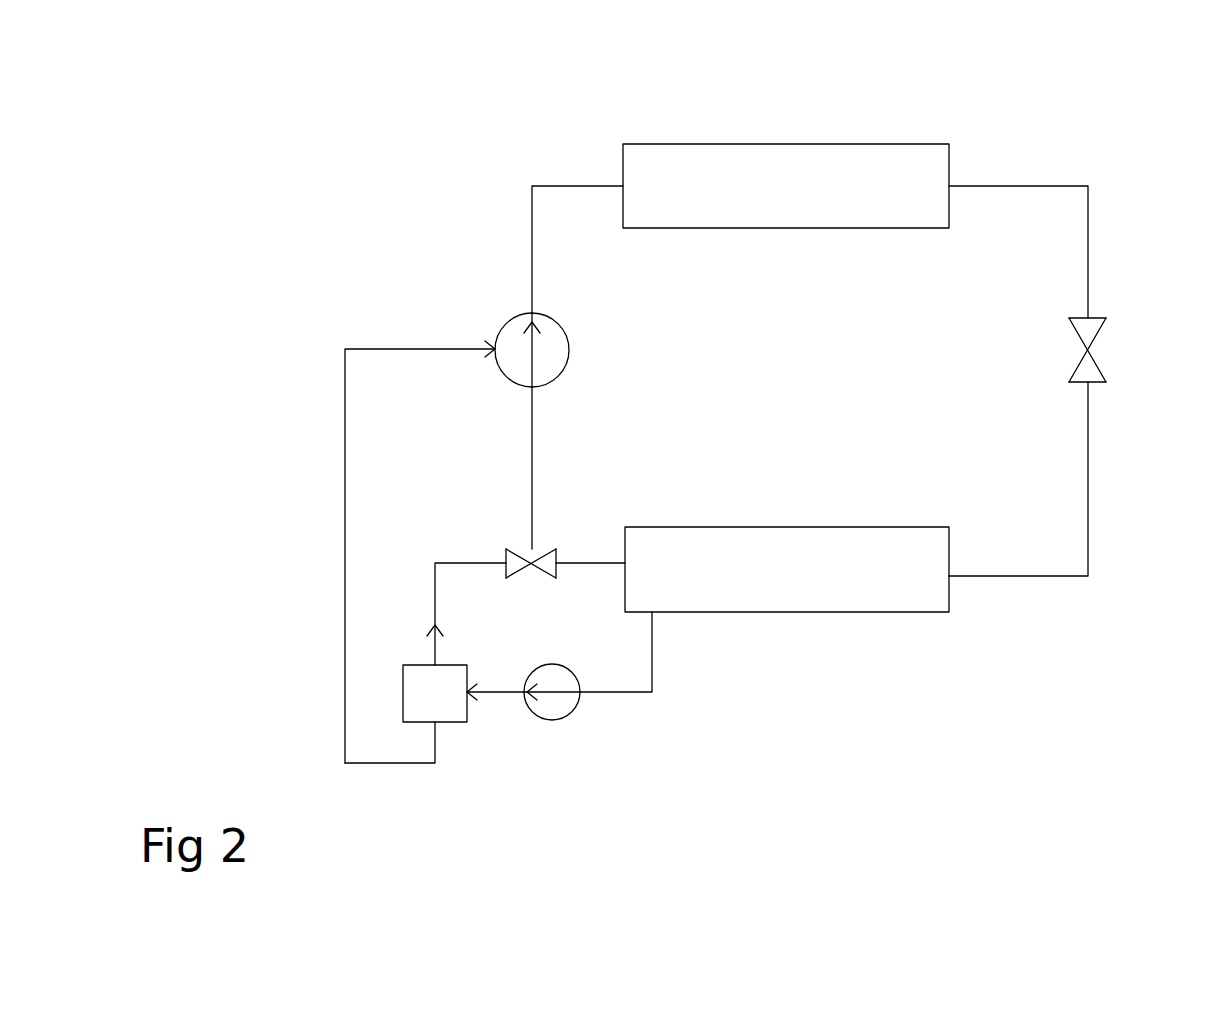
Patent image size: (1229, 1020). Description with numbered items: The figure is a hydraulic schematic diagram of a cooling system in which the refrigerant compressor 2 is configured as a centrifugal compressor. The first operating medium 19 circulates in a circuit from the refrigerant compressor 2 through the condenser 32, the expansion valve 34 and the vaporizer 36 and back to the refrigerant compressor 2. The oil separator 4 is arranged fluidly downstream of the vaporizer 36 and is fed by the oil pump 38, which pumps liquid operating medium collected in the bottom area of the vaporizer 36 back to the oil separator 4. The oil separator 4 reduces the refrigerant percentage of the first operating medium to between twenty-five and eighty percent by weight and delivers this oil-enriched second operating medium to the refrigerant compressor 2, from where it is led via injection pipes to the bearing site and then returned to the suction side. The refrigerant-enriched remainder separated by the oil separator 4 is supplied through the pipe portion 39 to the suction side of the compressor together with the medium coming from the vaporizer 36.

The refrigerant compressor 2 is at (502, 315).
The oil separator 4 is at (460, 705).
The first operating medium 19 is at (568, 183).
The condenser 32 is at (693, 150).
The expansion valve 34 is at (1107, 318).
The vaporizer 36 is at (818, 599).
The oil pump 38 is at (563, 705).
The pipe portion 39 is at (432, 580).